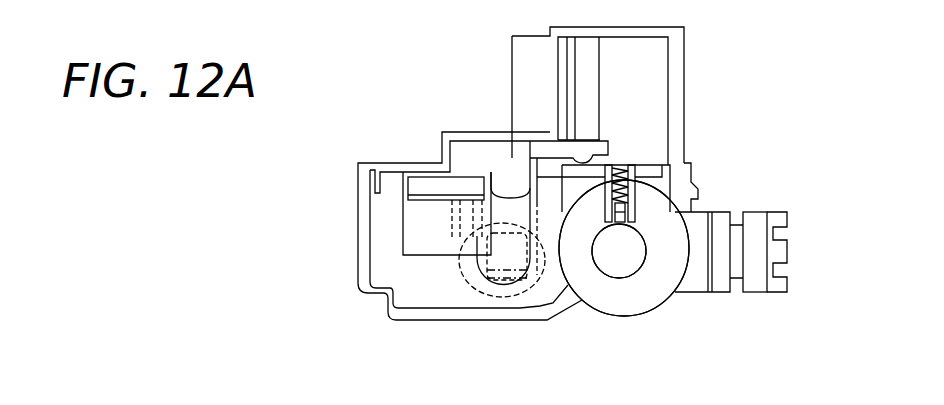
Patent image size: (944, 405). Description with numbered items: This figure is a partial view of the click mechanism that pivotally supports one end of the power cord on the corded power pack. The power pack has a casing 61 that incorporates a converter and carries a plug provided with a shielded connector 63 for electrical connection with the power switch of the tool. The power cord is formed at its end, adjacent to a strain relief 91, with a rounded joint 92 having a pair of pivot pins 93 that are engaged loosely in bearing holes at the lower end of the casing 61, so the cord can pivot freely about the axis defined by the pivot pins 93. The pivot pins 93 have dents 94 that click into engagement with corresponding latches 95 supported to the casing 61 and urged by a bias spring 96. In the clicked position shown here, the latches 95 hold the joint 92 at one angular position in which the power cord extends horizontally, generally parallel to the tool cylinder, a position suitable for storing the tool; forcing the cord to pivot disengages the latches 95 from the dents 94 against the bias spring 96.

The casing 61 is at (360, 290).
The shielded connector 63 is at (512, 73).
The strain relief 91 is at (758, 287).
The rounded joint 92 is at (658, 287).
The pivot pins 93 is at (638, 242).
The dents 94 is at (618, 228).
The latches 95 is at (612, 221).
The bias spring 96 is at (622, 172).